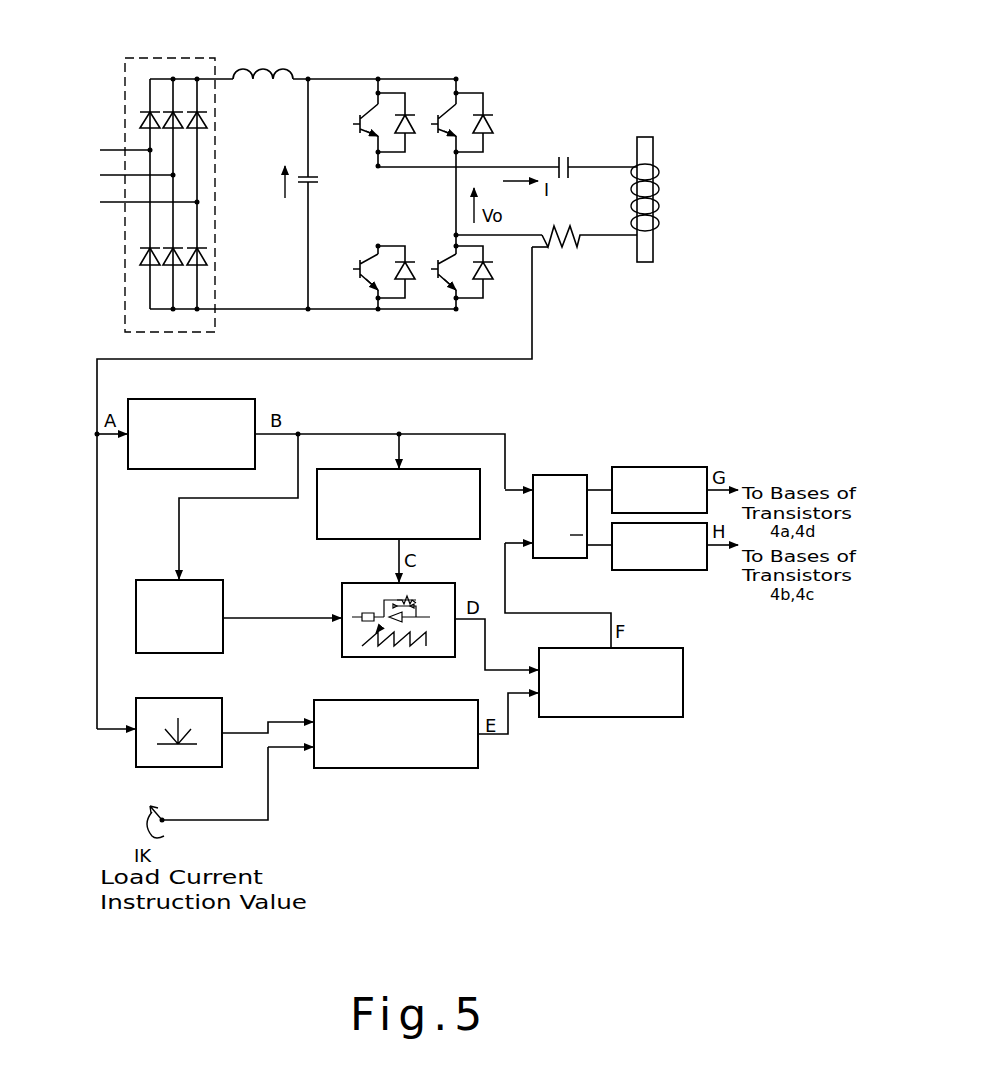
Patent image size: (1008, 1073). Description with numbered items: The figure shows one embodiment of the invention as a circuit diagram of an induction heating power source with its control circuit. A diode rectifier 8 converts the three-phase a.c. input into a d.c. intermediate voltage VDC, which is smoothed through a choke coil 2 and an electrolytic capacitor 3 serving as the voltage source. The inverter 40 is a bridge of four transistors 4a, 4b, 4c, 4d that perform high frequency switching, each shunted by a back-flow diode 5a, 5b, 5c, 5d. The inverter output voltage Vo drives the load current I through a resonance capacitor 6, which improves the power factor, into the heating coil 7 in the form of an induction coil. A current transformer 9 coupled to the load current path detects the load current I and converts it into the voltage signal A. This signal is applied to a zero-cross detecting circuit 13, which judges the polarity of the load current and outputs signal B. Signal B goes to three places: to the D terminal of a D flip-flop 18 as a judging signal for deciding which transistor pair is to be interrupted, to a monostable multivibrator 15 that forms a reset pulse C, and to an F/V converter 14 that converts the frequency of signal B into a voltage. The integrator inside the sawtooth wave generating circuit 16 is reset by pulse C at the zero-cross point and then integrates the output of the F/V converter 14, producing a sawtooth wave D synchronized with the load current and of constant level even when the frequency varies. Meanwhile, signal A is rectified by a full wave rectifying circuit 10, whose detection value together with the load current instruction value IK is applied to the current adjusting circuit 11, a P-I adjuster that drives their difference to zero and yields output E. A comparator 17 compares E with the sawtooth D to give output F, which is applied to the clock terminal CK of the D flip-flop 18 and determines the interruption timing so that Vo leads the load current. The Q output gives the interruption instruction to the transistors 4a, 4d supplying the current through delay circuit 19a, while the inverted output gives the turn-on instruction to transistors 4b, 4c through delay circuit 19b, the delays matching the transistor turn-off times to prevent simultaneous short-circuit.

The diode rectifier 8 is at (187, 58).
The choke coil 2 is at (269, 88).
The electrolytic capacitor 3 is at (318, 178).
The inverter 40 is at (434, 61).
The transistor 4a is at (357, 114).
The transistor 4b is at (355, 264).
The transistor 4c is at (437, 114).
The transistor 4d is at (434, 264).
The back-flow diode 5a is at (407, 136).
The back-flow diode 5b is at (407, 283).
The back-flow diode 5c is at (487, 136).
The back-flow diode 5d is at (486, 283).
The resonance capacitor 6 is at (566, 154).
The heating coil 7 is at (661, 190).
The current transformer 9 is at (566, 250).
The zero-cross detecting circuit 13 is at (197, 399).
The F/V converter 14 is at (203, 580).
The monostable multivibrator 15 is at (452, 469).
The sawtooth wave generating circuit 16 is at (378, 583).
The D flip-flop 18 is at (562, 475).
The delay circuit 19a is at (648, 467).
The delay circuit 19b is at (651, 570).
The comparator 17 is at (644, 717).
The full wave rectifying circuit 10 is at (198, 698).
The current adjusting circuit 11 is at (426, 768).